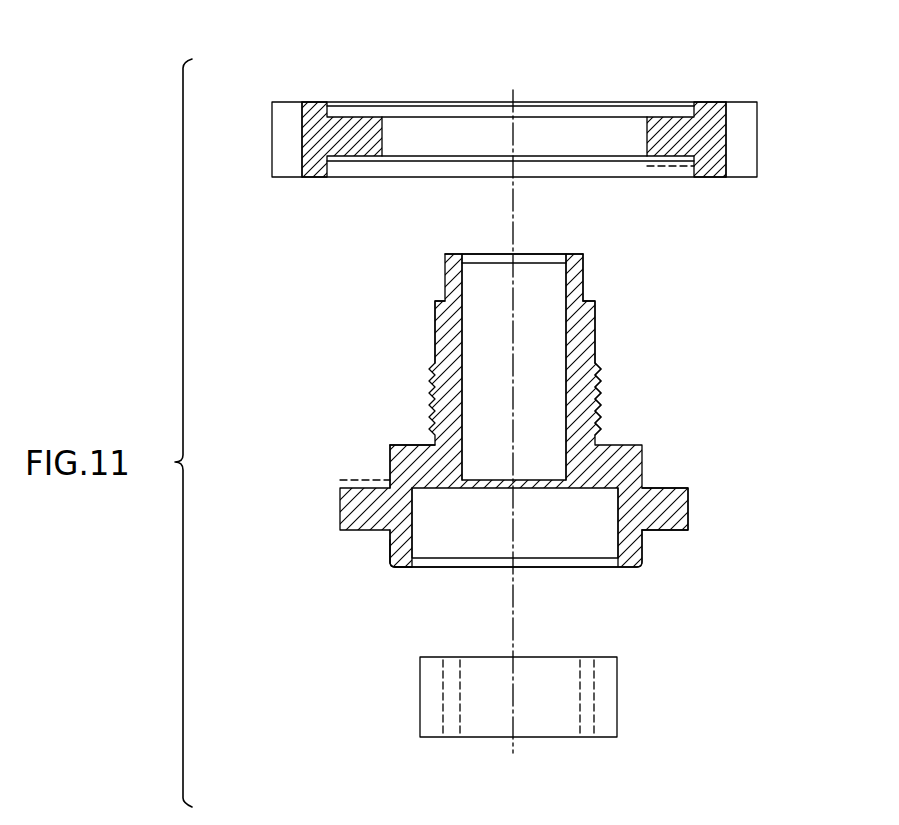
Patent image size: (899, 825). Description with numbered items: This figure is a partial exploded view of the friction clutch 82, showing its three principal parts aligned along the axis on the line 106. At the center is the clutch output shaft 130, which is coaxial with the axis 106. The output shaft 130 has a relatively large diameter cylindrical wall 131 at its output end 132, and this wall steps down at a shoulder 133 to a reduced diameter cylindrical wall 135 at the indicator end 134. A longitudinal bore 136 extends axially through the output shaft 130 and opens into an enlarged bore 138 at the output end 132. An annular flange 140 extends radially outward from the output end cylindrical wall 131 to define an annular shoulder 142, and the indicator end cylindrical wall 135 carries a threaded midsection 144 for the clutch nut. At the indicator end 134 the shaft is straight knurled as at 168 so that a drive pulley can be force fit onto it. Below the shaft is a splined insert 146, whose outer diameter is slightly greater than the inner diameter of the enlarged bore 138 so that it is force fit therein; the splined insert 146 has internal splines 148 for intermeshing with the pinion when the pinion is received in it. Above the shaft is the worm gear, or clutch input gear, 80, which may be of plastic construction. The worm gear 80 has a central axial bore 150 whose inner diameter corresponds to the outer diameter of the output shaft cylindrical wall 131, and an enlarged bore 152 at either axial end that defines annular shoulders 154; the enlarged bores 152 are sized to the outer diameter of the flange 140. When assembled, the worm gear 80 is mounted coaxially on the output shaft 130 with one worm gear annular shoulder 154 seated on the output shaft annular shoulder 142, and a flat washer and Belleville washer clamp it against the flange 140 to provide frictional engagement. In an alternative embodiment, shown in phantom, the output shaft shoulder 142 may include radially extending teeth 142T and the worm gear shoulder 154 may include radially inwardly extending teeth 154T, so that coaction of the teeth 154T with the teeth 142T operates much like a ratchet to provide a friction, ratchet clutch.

The worm gear 80 is at (776, 114).
The clutch 82 is at (716, 320).
The axis line 106 is at (514, 572).
The clutch output shaft 130 is at (599, 328).
The cylindrical wall 131 is at (386, 450).
The output end 132 is at (386, 563).
The shoulder 133 is at (409, 443).
The indicator end 134 is at (588, 250).
The cylindrical wall 135 is at (431, 323).
The longitudinal bore 136 is at (566, 287).
The enlarged bore 138 is at (414, 532).
The annular flange 140 is at (690, 503).
The annular shoulder 142 is at (659, 489).
The radially extending teeth 142T is at (362, 478).
The threaded midsection 144 is at (602, 392).
The splined insert 146 is at (620, 697).
The internal splines 148 is at (460, 700).
The central axial bore 150 is at (383, 135).
The enlarged bore 152 is at (329, 106).
The annular shoulder 154 is at (346, 119).
The radially inwardly extending teeth 154T is at (680, 170).
The knurled end 168 is at (590, 273).